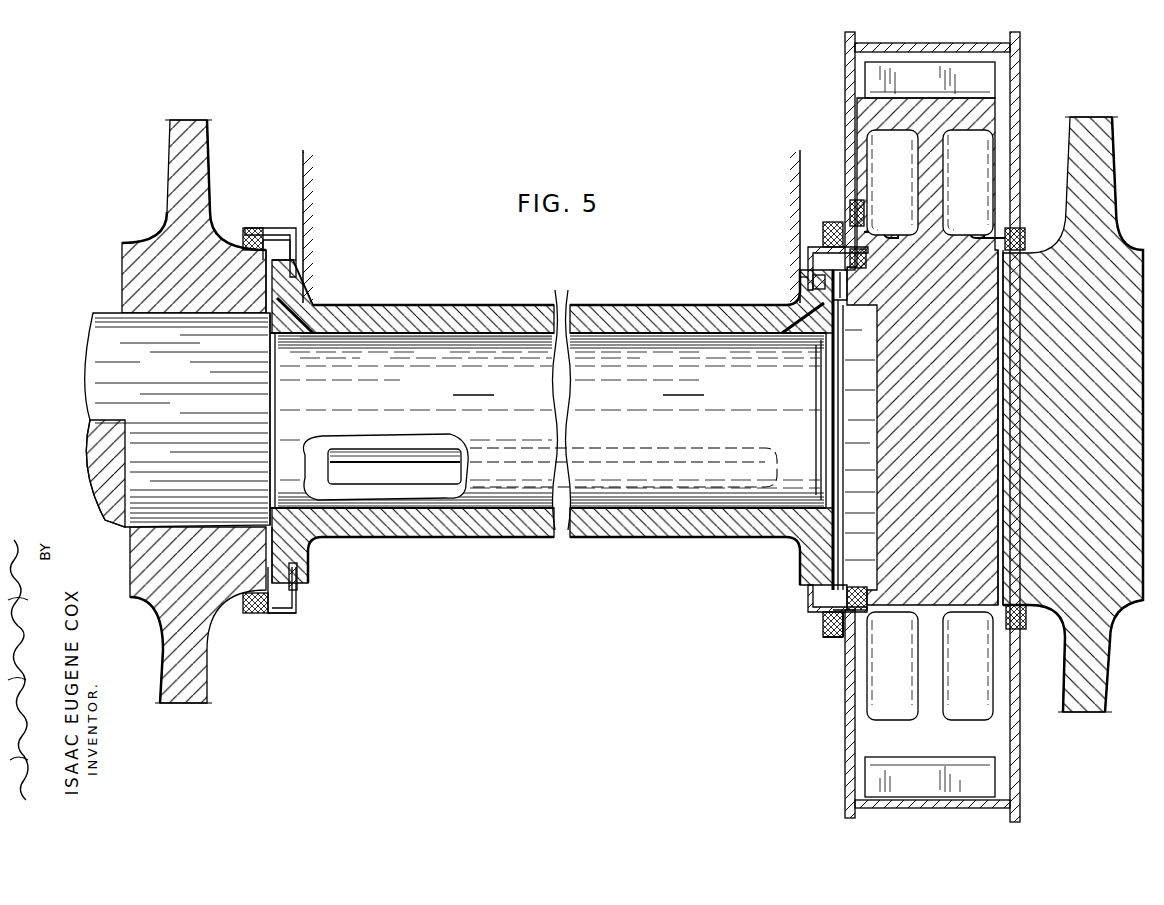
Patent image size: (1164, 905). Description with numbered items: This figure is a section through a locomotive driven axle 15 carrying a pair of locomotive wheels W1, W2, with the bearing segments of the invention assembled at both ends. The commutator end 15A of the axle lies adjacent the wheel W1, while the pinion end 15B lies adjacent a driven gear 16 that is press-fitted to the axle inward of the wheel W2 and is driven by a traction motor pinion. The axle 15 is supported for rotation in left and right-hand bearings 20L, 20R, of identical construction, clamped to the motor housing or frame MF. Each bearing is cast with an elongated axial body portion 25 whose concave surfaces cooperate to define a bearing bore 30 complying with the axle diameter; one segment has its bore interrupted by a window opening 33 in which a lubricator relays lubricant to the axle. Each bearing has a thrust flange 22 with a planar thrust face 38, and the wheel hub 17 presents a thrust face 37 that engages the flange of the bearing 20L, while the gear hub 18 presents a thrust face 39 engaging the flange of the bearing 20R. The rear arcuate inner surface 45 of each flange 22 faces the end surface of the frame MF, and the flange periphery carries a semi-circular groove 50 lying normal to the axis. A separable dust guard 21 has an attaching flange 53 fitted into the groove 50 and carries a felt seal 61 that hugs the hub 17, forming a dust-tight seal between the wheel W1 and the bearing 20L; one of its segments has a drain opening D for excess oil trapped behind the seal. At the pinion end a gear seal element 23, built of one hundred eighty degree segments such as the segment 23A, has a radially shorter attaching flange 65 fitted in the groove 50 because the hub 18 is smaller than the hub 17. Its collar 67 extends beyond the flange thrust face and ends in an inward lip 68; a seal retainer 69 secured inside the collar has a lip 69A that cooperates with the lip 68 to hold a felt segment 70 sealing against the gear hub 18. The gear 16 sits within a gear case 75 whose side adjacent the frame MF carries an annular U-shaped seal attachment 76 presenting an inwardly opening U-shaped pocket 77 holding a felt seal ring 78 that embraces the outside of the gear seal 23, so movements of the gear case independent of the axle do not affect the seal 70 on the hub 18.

The locomotive wheel W1 is at (163, 161).
The locomotive wheel W2 is at (1112, 158).
The axle 15 is at (155, 380).
The commutator end 15A is at (412, 419).
The pinion end 15B is at (698, 420).
The driven gear 16 is at (907, 748).
The hub 17 is at (213, 218).
The hub 18 is at (862, 417).
The left-hand bearing 20L is at (378, 413).
The right-hand bearing 20R is at (643, 532).
The dust guard 21 is at (311, 224).
The thrust flange 22 is at (305, 270).
The gear seal element 23 is at (812, 243).
The dust guard segment 23A is at (857, 610).
The axial body portion 25 is at (516, 306).
The bearing bore 30 is at (383, 332).
The window opening 33 is at (390, 470).
The thrust face 37 is at (272, 545).
The thrust face 38 is at (300, 300).
The thrust face 39 is at (843, 279).
The arcuate inner surface 45 is at (308, 286).
The groove 50 is at (305, 568).
The attaching flange 53 is at (300, 250).
The seal 61 is at (280, 228).
The attaching flange 65 is at (296, 596).
The collar 67 is at (896, 228).
The lip 68 is at (866, 260).
The seal retainer 69 is at (810, 598).
The lip 69A is at (852, 587).
The felt segment 70 is at (858, 266).
The gear case 75 is at (1018, 62).
The U-shaped seal attachment 76 is at (835, 640).
The U-shaped pocket 77 is at (830, 632).
The seal ring 78 is at (830, 625).
The drain opening D is at (274, 614).
The motor housing or frame MF is at (300, 160).